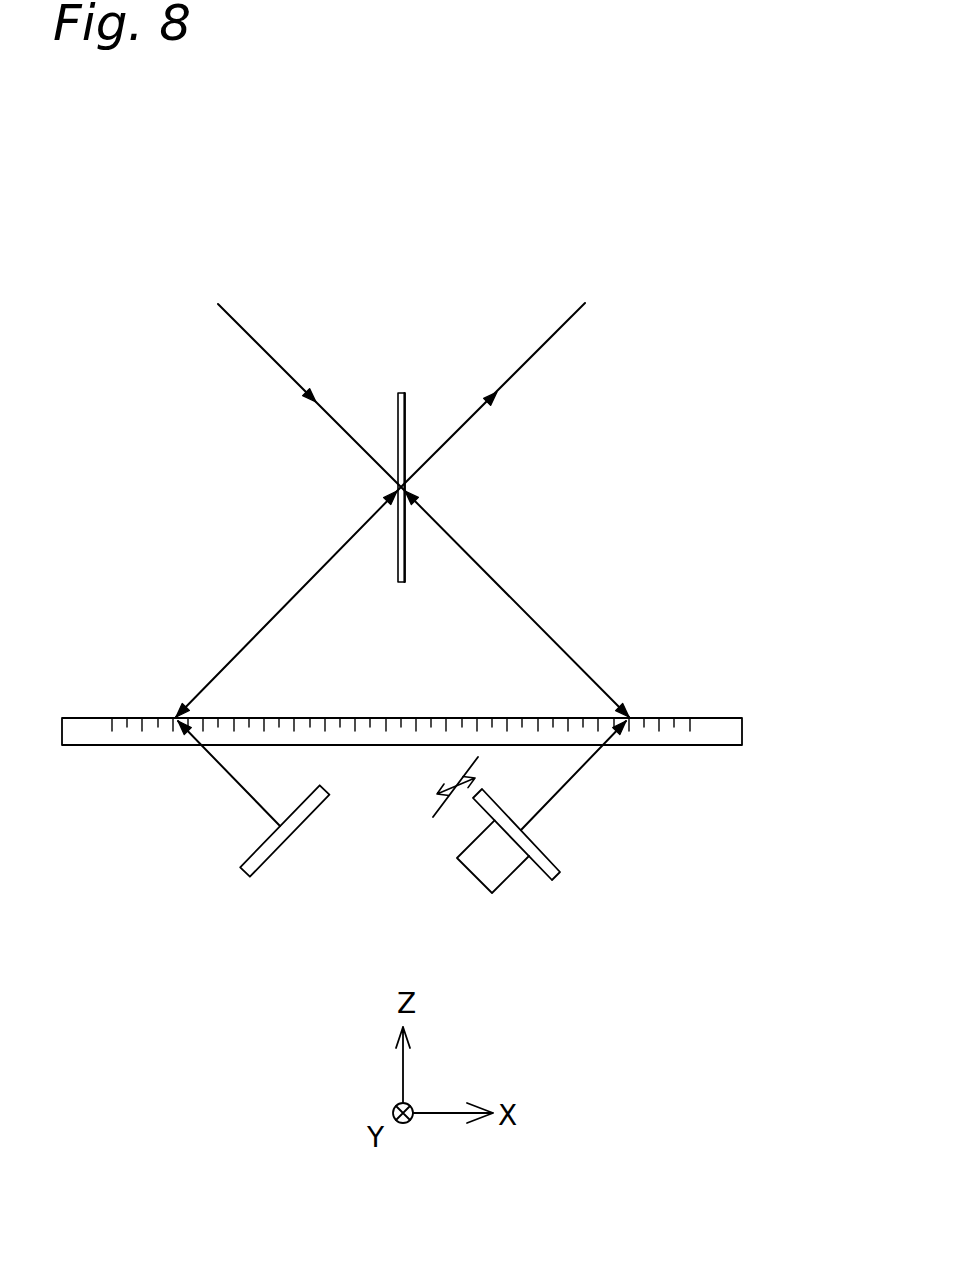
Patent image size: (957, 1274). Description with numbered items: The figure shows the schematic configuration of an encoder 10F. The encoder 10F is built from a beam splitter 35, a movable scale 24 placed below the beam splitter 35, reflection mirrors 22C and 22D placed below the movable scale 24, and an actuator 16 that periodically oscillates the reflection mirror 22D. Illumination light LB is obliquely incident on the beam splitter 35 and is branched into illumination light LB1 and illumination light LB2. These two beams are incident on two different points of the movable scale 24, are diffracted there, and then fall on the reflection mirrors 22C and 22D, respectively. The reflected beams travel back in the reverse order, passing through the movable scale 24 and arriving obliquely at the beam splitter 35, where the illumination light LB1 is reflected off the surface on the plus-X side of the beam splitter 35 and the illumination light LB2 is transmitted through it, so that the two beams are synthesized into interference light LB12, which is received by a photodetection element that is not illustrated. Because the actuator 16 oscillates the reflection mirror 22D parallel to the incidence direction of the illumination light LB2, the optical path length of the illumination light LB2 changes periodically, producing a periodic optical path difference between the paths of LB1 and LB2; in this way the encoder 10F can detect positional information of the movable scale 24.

The encoder 10F is at (648, 143).
The illumination light LB is at (247, 330).
The interference light LB12 is at (572, 318).
The beam splitter 35 is at (406, 393).
The illumination light LB2 is at (323, 563).
The illumination light LB1 is at (480, 563).
The movable scale 24 is at (717, 720).
The reflection mirror 22C is at (240, 868).
The actuator 16 is at (473, 876).
The reflection mirror 22D is at (560, 872).